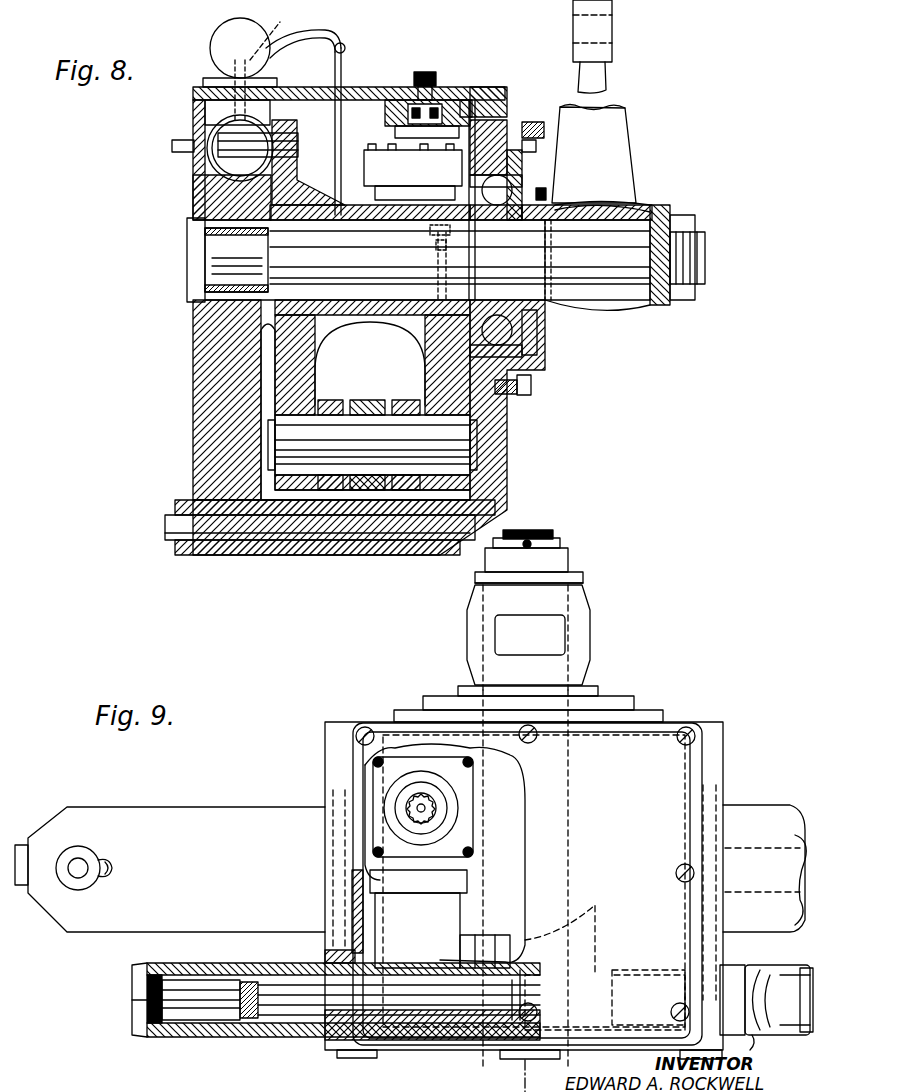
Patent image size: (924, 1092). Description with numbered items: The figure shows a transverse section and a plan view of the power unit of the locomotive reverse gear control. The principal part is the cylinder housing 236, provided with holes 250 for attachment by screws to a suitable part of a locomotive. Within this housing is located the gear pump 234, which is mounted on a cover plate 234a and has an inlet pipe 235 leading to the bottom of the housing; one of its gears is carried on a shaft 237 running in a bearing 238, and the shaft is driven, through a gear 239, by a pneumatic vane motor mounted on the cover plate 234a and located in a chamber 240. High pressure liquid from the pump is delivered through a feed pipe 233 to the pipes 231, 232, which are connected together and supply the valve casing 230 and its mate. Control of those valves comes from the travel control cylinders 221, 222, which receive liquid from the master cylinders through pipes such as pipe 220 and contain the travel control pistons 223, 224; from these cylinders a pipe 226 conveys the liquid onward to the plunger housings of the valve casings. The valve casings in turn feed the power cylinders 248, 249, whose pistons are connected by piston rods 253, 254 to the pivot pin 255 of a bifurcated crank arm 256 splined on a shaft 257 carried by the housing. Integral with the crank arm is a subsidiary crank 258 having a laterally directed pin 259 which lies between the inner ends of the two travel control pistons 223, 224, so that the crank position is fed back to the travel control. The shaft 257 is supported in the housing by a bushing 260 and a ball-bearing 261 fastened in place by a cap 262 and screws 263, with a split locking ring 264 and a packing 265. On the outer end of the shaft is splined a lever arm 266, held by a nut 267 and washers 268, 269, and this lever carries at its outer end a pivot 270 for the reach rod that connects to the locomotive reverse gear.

In FIG. 8, the pipe 220 is at (172, 148).
In FIG. 9, the travel control cylinder 221 is at (190, 1037).
In FIG. 9, the travel control cylinder 222 is at (765, 968).
In FIG. 9, the travel control piston 223 is at (300, 1010).
In FIG. 9, the travel control piston 224 is at (768, 1050).
In FIG. 8, the pipe 226 is at (282, 30).
In FIG. 8, the valve casing 230 is at (220, 42).
In FIG. 8, the pipe 231 is at (333, 30).
In FIG. 8, the pipe 232 is at (347, 45).
In FIG. 8, the feed pipe 233 is at (337, 64).
In FIG. 8, the gear pump 234 is at (413, 172).
In FIG. 8, the cover plate 234a is at (200, 96).
In FIG. 8, the inlet pipe 235 is at (440, 265).
In FIG. 8, the cylinder housing 236 is at (505, 480).
In FIG. 8, the shaft 237 is at (395, 126).
In FIG. 8, the bearing 238 is at (470, 100).
In FIG. 9, the bearing 238 is at (442, 820).
In FIG. 8, the gear 239 is at (436, 78).
In FIG. 9, the gear 239 is at (435, 807).
In FIG. 8, the chamber 240 is at (263, 112).
In FIG. 9, the power cylinder 248 is at (789, 797).
In FIG. 9, the power cylinder 249 is at (228, 799).
In FIG. 8, the holes 250 is at (170, 533).
In FIG. 8, the piston rod 253 is at (330, 400).
In FIG. 9, the piston rod 253 is at (752, 845).
In FIG. 8, the piston rod 254 is at (372, 365).
In FIG. 9, the piston rod 254 is at (408, 885).
In FIG. 8, the pivot pin 255 is at (445, 440).
In FIG. 8, the bifurcated crank arm 256 is at (285, 385).
In FIG. 9, the bifurcated crank arm 256 is at (508, 902).
In FIG. 8, the shaft 257 is at (610, 290).
In FIG. 9, the shaft 257 is at (460, 872).
In FIG. 8, the subsidiary crank 258 is at (322, 172).
In FIG. 9, the subsidiary crank 258 is at (512, 950).
In FIG. 8, the laterally directed pin 259 is at (225, 155).
In FIG. 9, the laterally directed pin 259 is at (510, 1010).
In FIG. 8, the bushing 260 is at (198, 295).
In FIG. 8, the ball-bearing 261 is at (520, 340).
In FIG. 8, the cap 262 is at (540, 366).
In FIG. 8, the screws 263 is at (540, 392).
In FIG. 8, the split locking ring 264 is at (522, 165).
In FIG. 8, the packing 265 is at (546, 194).
In FIG. 8, the lever arm 266 is at (618, 118).
In FIG. 9, the lever arm 266 is at (560, 640).
In FIG. 8, the nut 267 is at (690, 218).
In FIG. 9, the nut 267 is at (568, 560).
In FIG. 8, the washer 268 is at (660, 205).
In FIG. 9, the washer 268 is at (583, 575).
In FIG. 8, the washer 269 is at (650, 310).
In FIG. 9, the washer 269 is at (583, 588).
In FIG. 8, the pivot 270 is at (612, 24).